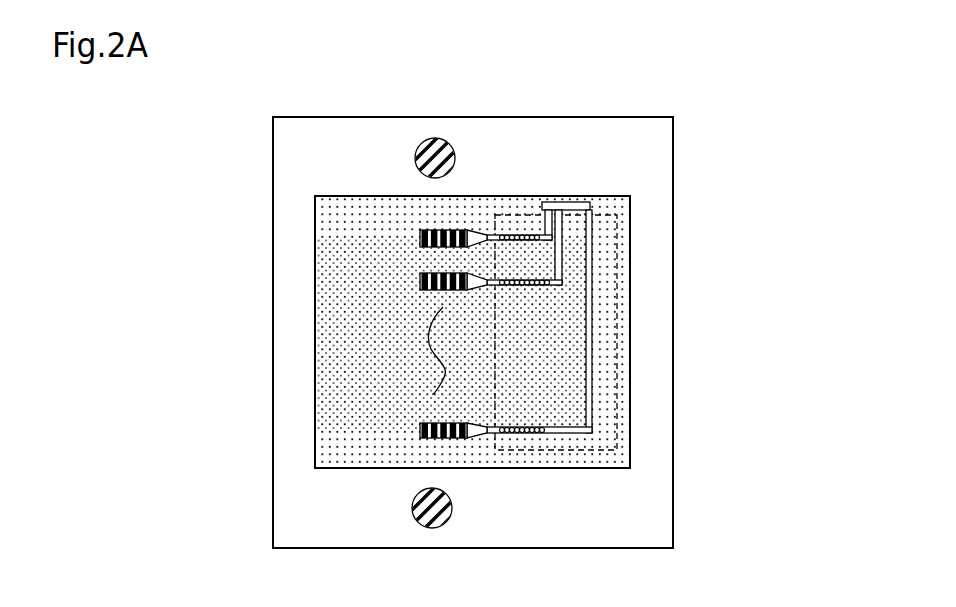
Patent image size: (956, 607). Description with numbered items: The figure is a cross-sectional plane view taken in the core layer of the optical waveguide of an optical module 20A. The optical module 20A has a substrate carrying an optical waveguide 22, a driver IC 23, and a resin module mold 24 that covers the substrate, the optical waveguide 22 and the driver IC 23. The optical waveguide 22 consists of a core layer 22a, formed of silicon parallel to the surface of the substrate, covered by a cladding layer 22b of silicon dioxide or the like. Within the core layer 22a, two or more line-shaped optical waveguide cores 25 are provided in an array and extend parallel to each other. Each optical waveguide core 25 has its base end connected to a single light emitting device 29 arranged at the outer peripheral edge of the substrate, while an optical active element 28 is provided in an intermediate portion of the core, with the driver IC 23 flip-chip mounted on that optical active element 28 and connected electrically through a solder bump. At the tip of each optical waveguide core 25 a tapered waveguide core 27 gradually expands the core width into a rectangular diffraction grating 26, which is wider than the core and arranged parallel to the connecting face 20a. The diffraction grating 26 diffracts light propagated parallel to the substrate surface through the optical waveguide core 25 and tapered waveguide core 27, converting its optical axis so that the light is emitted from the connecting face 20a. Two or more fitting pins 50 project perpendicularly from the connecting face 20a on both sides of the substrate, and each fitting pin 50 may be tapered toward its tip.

The optical module 20A is at (676, 116).
The connecting face 20a is at (657, 178).
The module mold 24 is at (368, 158).
The fitting pin 50 is at (435, 138).
The optical waveguide 22 is at (752, 392).
The core layer 22a is at (588, 400).
The cladding layer 22b is at (630, 435).
The driver IC 23 is at (617, 343).
The light emitting device 29 is at (551, 202).
The optical waveguide core 25 is at (496, 236).
The optical active element 28 is at (528, 236).
The tapered waveguide core 27 is at (477, 230).
The diffraction grating 26 is at (420, 238).